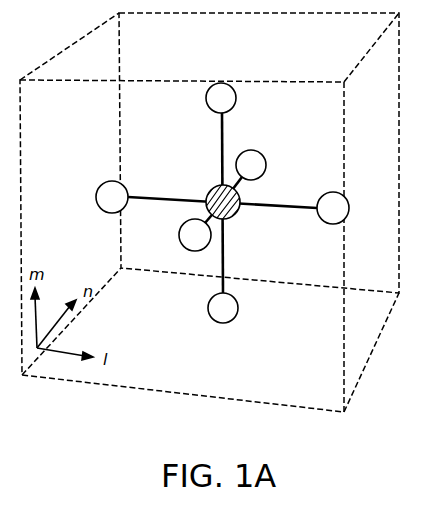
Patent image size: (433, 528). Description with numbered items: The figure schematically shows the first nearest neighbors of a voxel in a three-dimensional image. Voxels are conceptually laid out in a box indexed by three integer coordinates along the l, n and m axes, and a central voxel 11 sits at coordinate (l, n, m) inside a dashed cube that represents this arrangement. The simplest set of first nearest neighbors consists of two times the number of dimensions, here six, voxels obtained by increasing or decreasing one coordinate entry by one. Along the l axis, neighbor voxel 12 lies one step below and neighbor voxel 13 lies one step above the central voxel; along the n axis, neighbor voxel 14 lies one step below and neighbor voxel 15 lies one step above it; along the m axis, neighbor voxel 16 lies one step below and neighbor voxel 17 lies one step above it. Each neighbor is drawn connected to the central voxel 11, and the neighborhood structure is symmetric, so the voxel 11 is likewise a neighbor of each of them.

The voxel 11 is at (211, 191).
The neighbor voxel 12 is at (99, 186).
The neighbor voxel 13 is at (338, 192).
The neighbor voxel 14 is at (183, 231).
The neighbor voxel 15 is at (264, 163).
The neighbor voxel 16 is at (235, 310).
The neighbor voxel 17 is at (232, 104).